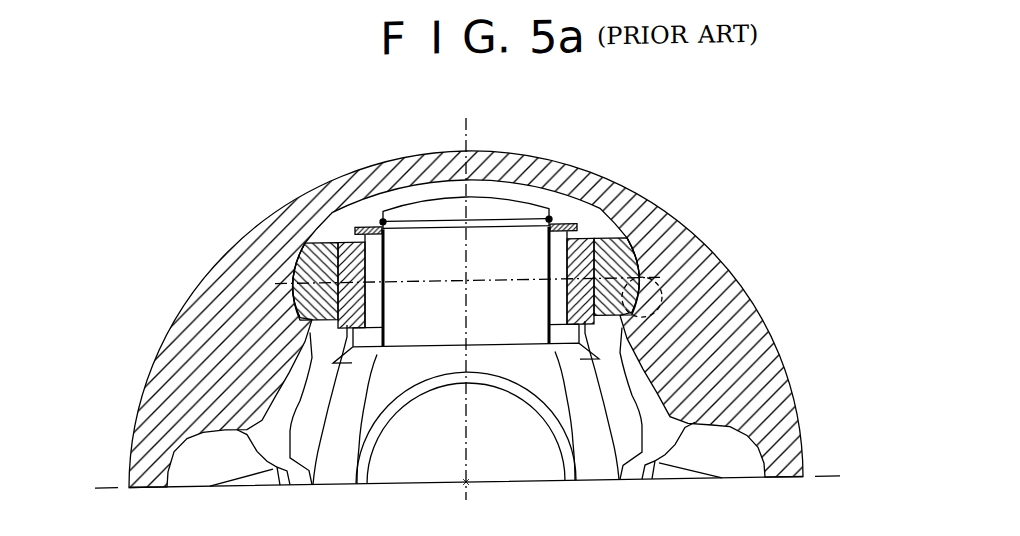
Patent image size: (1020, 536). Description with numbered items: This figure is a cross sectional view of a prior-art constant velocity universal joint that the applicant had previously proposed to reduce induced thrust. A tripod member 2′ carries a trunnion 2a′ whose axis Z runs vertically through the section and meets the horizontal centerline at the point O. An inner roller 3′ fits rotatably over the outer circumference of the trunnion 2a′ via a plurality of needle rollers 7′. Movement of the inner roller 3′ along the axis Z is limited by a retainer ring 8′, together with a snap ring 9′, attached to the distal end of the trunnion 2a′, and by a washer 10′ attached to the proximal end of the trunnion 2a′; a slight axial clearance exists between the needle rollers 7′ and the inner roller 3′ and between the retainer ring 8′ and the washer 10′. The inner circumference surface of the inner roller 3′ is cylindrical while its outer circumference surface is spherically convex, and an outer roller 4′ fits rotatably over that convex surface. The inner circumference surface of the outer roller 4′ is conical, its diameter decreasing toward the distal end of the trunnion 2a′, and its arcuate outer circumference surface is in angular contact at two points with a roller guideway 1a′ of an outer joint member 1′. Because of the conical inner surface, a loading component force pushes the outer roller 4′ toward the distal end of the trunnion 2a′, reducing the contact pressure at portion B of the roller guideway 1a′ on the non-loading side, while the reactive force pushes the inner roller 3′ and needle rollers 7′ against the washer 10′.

The outer joint member 1′ is at (182, 302).
The roller guideway 1a′ is at (297, 268).
The tripod member 2′ is at (303, 399).
The trunnion 2a′ is at (435, 237).
The inner roller 3′ is at (343, 240).
The outer roller 4′ is at (306, 240).
The needle rollers 7′ is at (384, 304).
The retainer ring 8′ is at (364, 225).
The snap ring 9′ is at (381, 217).
The washer 10′ is at (367, 332).
The portion B of roller guideway B is at (656, 303).
The joint center O is at (468, 481).
The axis Z is at (468, 294).